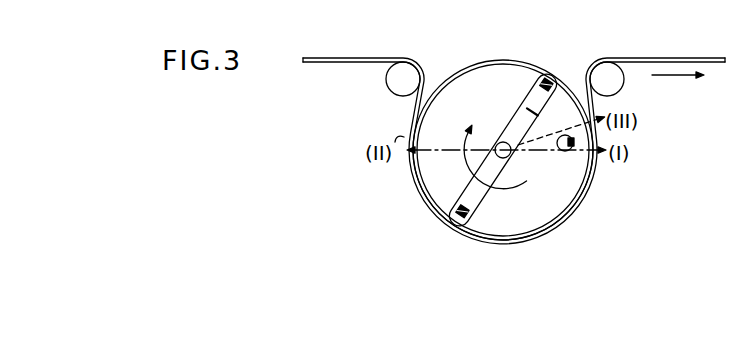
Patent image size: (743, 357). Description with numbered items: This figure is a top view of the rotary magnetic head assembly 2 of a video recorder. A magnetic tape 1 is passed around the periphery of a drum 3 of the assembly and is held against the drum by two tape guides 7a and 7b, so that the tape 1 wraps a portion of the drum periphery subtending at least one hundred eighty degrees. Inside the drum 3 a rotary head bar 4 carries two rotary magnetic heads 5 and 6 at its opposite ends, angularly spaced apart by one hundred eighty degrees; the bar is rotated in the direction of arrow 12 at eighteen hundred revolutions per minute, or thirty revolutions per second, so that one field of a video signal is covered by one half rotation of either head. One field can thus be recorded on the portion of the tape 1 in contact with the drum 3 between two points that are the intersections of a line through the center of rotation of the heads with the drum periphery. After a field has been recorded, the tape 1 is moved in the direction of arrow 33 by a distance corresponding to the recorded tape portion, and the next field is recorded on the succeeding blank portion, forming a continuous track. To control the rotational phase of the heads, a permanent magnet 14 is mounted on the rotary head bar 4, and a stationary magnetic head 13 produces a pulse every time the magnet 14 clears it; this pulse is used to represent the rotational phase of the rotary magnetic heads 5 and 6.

The magnetic tape 1 is at (550, 239).
The rotary magnetic head assembly 2 is at (517, 33).
The drum 3 is at (580, 197).
The rotary head bar 4 is at (474, 202).
The rotary magnetic head 5 is at (458, 218).
The rotary magnetic head 6 is at (551, 81).
The tape guide 7a is at (387, 82).
The tape guide 7b is at (623, 78).
The arrow 12 is at (470, 165).
The stationary magnetic head 13 is at (561, 151).
The permanent magnet 14 is at (528, 104).
The arrow 33 is at (672, 76).